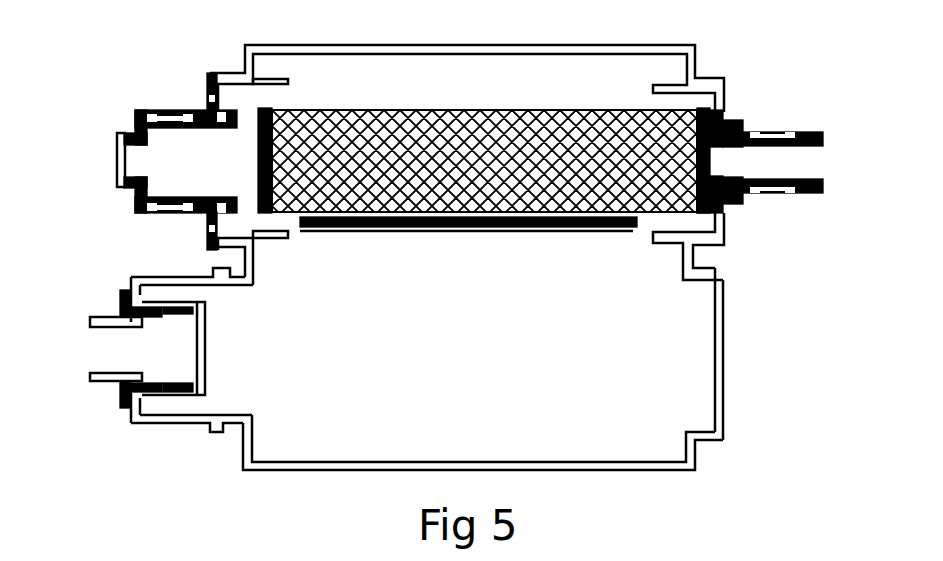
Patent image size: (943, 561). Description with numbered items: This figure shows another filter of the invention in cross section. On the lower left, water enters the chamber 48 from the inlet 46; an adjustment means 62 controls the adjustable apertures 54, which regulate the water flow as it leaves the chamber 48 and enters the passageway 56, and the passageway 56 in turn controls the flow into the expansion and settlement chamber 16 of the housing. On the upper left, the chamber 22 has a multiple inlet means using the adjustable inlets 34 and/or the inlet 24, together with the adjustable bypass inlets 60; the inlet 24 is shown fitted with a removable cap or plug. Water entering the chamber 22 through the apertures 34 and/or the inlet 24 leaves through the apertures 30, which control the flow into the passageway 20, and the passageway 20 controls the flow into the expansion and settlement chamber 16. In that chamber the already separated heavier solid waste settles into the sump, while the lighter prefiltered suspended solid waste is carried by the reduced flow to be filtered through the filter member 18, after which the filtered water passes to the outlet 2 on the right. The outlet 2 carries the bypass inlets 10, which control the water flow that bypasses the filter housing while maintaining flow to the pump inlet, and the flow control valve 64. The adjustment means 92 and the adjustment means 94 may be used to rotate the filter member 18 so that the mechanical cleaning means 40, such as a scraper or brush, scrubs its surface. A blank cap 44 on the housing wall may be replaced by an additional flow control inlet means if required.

The outlet 2 is at (782, 159).
The bypass inlets 10 is at (777, 132).
The expansion and settlement chamber 16 is at (474, 429).
The filter member 18 is at (585, 112).
The passageway 20 is at (263, 97).
The chamber 22 is at (193, 176).
The inlet 24 is at (117, 158).
The apertures 30 is at (247, 113).
The adjustable inlets 34 is at (167, 112).
The mechanical cleaning means 40 is at (502, 231).
The blank cap 44 is at (725, 371).
The inlet 46 is at (66, 347).
The chamber 48 is at (124, 362).
The adjustable apertures 54 is at (177, 388).
The passageway 56 is at (197, 293).
The adjustable bypass inlets 60 is at (205, 97).
The adjustment means 62 is at (120, 398).
The flow control valve 64 is at (712, 145).
The adjustment means 92 is at (738, 122).
The adjustment means 94 is at (200, 213).